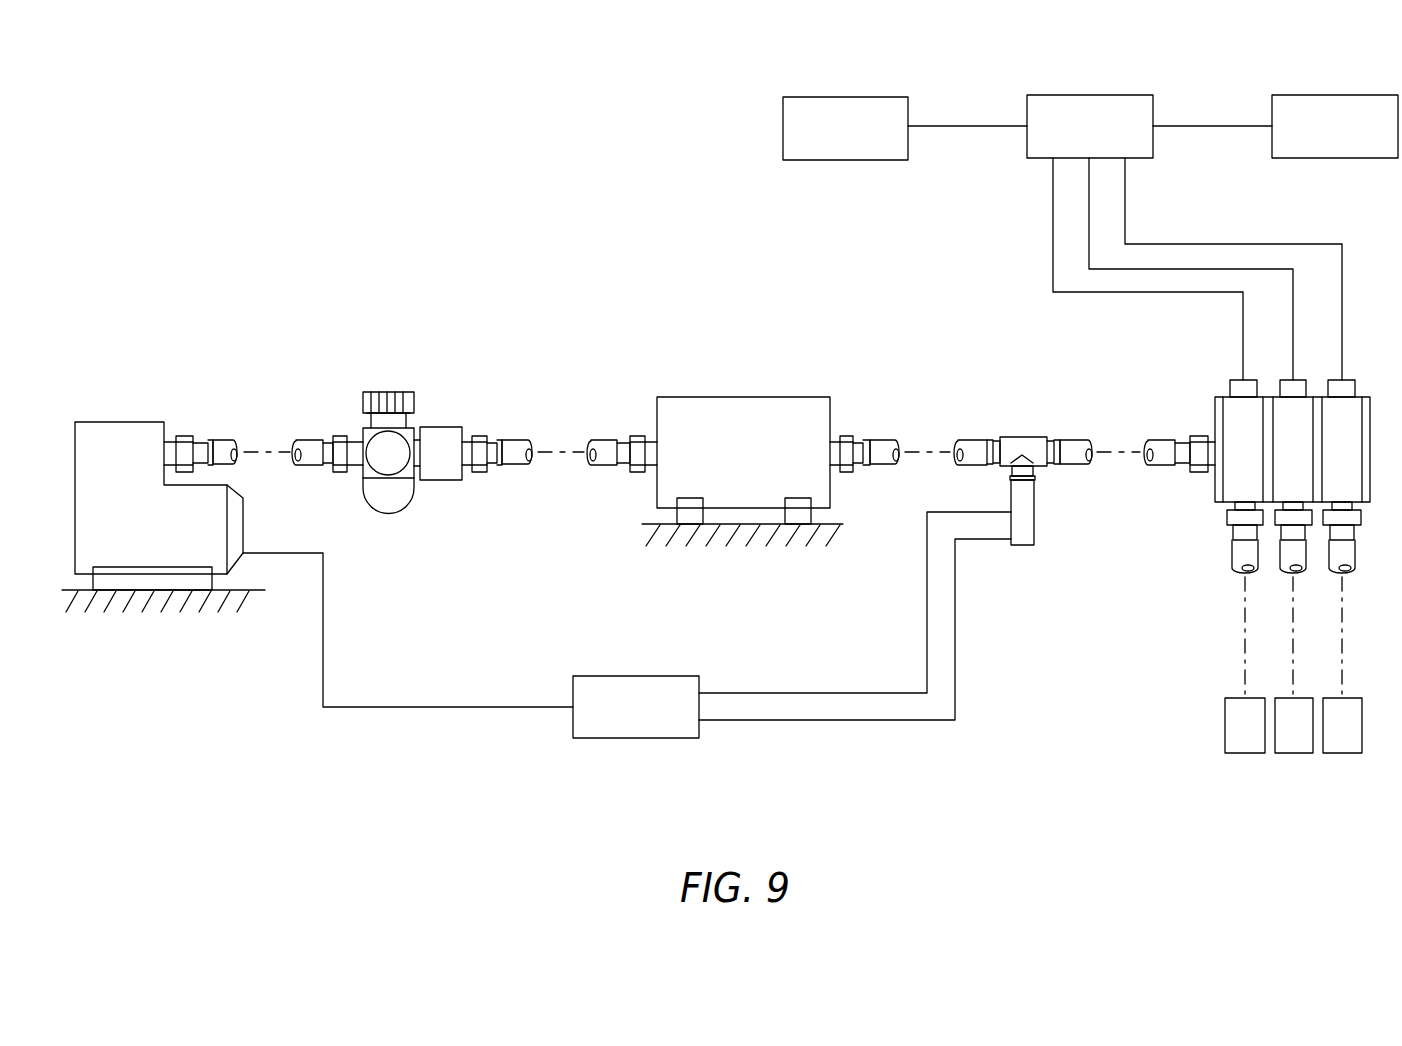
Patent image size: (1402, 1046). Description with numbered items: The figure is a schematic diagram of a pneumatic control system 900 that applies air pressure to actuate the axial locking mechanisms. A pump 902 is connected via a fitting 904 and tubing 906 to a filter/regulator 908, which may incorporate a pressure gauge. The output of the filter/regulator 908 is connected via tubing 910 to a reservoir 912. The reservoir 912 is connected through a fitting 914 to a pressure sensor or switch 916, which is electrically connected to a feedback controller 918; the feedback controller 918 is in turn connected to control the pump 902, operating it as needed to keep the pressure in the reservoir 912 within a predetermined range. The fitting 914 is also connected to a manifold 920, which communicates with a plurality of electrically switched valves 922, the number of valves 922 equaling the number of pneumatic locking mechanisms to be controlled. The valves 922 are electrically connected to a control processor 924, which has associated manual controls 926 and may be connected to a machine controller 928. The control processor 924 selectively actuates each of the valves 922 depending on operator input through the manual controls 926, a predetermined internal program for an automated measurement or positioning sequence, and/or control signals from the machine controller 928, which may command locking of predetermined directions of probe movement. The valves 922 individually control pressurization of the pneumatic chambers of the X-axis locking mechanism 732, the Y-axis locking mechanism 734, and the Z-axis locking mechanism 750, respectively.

The pneumatic control system 900 is at (1012, 704).
The pump 902 is at (108, 422).
The fitting 904 is at (185, 436).
The tubing 906 is at (238, 456).
The filter/regulator 908 is at (392, 392).
The tubing 910 is at (596, 438).
The reservoir 912 is at (727, 397).
The fitting 914 is at (1027, 437).
The pressure sensor or switch 916 is at (1027, 547).
The feedback controller 918 is at (620, 676).
The manifold 920 is at (1219, 483).
The electrically switched valves 922 is at (1337, 417).
The control processor 924 is at (1073, 95).
The manual controls 926 is at (1318, 95).
The machine controller 928 is at (830, 97).
The X-axis locking mechanism 732 is at (1245, 753).
The Y-axis locking mechanism 734 is at (1293, 753).
The Z-axis locking mechanism 750 is at (1342, 753).